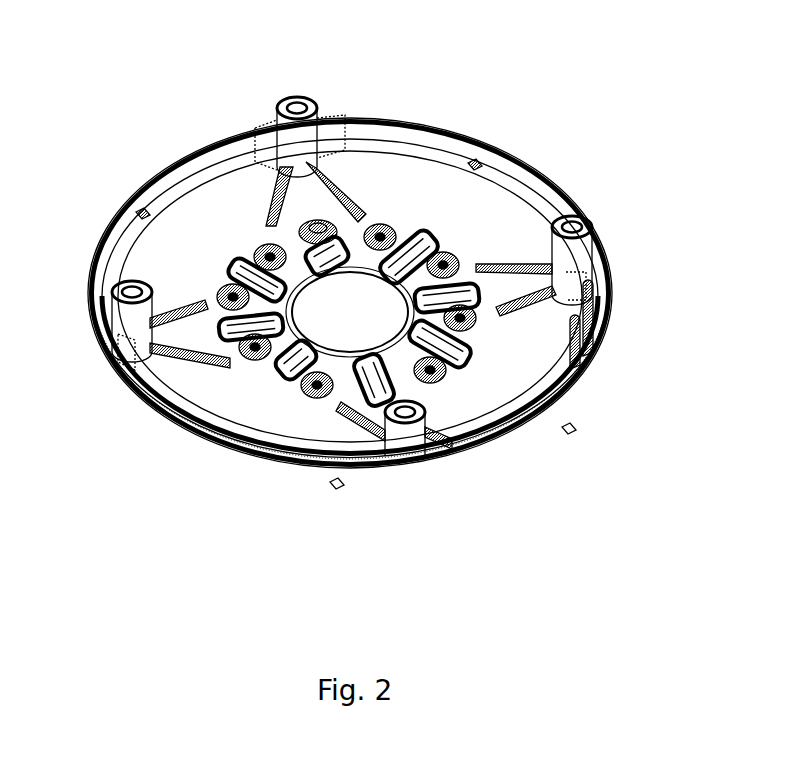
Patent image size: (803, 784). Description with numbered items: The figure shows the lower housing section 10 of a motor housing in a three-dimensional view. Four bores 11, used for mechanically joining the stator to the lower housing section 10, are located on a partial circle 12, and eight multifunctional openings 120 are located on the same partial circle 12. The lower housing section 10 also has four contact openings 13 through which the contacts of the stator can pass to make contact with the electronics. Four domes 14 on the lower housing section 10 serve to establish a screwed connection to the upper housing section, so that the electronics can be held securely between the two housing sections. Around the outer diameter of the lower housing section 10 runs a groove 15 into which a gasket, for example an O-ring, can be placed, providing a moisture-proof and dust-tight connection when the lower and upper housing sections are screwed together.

The lower housing section 10 is at (153, 150).
The bores 11 is at (390, 228).
The partial circle 12 is at (297, 247).
The multifunctional openings 120 is at (425, 247).
The contact openings 13 is at (457, 253).
The domes 14 is at (592, 223).
The groove 15 is at (617, 327).